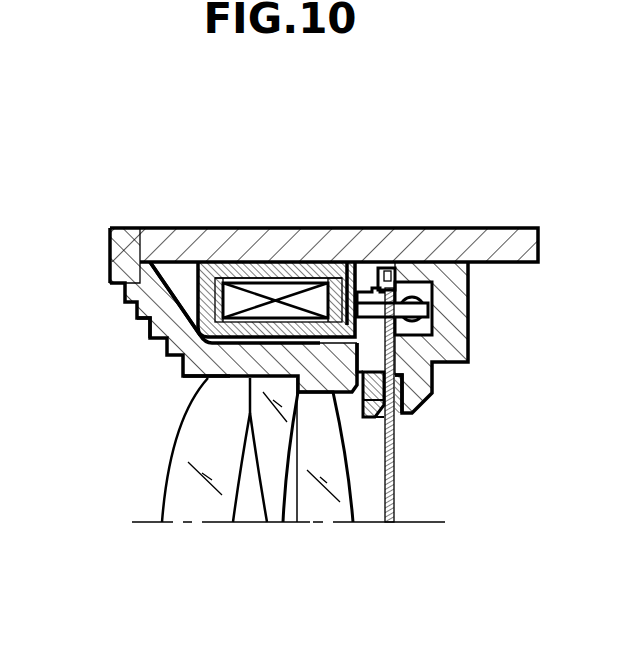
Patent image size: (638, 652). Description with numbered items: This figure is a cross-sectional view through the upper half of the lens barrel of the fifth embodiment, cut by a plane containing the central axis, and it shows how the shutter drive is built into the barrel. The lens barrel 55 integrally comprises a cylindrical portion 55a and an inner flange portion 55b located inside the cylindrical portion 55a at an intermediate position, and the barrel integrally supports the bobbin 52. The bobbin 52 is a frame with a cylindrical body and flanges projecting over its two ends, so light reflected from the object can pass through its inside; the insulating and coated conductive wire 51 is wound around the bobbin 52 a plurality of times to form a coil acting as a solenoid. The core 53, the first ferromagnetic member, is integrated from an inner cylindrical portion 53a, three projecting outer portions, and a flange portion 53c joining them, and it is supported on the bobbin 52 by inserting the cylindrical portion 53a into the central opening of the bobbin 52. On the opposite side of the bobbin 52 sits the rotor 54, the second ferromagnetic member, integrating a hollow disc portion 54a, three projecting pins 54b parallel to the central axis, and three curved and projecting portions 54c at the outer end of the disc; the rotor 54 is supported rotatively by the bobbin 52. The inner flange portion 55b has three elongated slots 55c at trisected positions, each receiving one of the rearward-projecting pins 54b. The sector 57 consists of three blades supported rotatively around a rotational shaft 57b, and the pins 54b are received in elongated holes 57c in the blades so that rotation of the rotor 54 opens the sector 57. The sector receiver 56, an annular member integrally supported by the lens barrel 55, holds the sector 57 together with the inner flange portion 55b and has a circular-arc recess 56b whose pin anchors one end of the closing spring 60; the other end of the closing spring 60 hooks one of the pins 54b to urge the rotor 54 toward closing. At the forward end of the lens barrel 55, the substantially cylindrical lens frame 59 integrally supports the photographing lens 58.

The insulating and coated conductive wire 51 is at (245, 300).
The bobbin 52 is at (222, 285).
The core 53 is at (185, 272).
The cylindrical portion 53a is at (192, 378).
The flange portion 53c is at (148, 334).
The rotor 54 is at (306, 272).
The hollow disc portion 54a is at (350, 275).
The projecting pins 54b is at (458, 305).
The curved and projecting portions 54c is at (272, 268).
The lens barrel 55 is at (492, 255).
The cylindrical portion 55a is at (150, 262).
The inner flange portion 55b is at (387, 268).
The elongated slots 55c is at (368, 290).
The sector receiver 56 is at (455, 360).
The circular-arc recess 56b is at (450, 345).
The sector 57 is at (395, 455).
The rotational shaft 57b is at (380, 280).
The elongated holes 57c is at (428, 388).
The photographing lens 58 is at (355, 528).
The lens frame 59 is at (118, 262).
The closing spring 60 is at (432, 318).